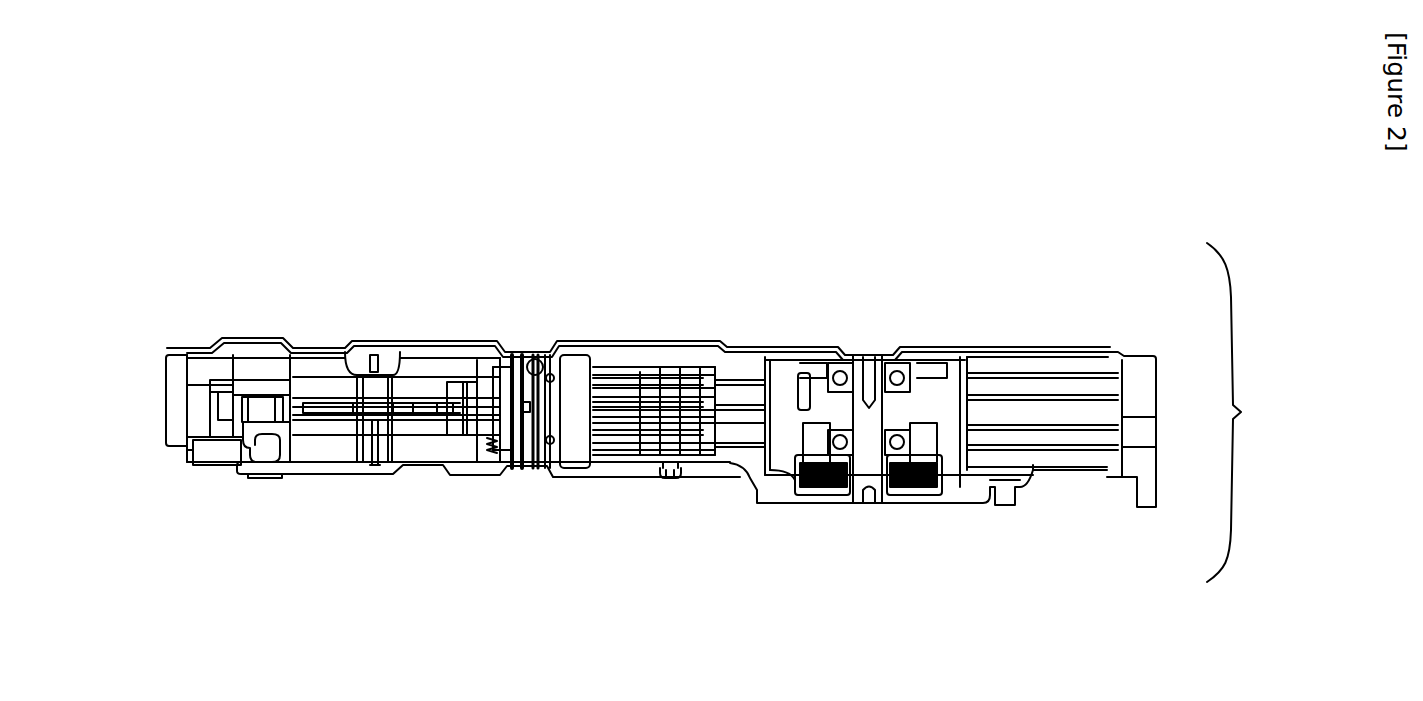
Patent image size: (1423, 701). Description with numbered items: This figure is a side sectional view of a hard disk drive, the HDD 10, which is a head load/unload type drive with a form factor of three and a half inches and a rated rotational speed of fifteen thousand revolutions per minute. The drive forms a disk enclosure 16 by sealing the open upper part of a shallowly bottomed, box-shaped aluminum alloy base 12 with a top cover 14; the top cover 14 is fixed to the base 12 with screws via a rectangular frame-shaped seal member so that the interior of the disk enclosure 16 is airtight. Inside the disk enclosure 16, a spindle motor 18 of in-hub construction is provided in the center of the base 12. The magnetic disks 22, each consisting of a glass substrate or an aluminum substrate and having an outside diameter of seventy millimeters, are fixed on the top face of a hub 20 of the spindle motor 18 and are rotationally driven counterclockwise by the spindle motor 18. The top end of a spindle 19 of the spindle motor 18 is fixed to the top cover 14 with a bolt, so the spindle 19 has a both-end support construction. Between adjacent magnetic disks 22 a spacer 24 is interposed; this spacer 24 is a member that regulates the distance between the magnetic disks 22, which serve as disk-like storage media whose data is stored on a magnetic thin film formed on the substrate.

The hard disk drive (HDD) 10 is at (643, 333).
The base 12 is at (1118, 477).
The top cover 14 is at (1110, 349).
The disk enclosure 16 is at (1199, 412).
The spindle motor 18 is at (925, 488).
The spindle 19 is at (872, 460).
The hub 20 is at (820, 470).
The magnetic disk 22 is at (740, 372).
The spacer 24 is at (960, 385).